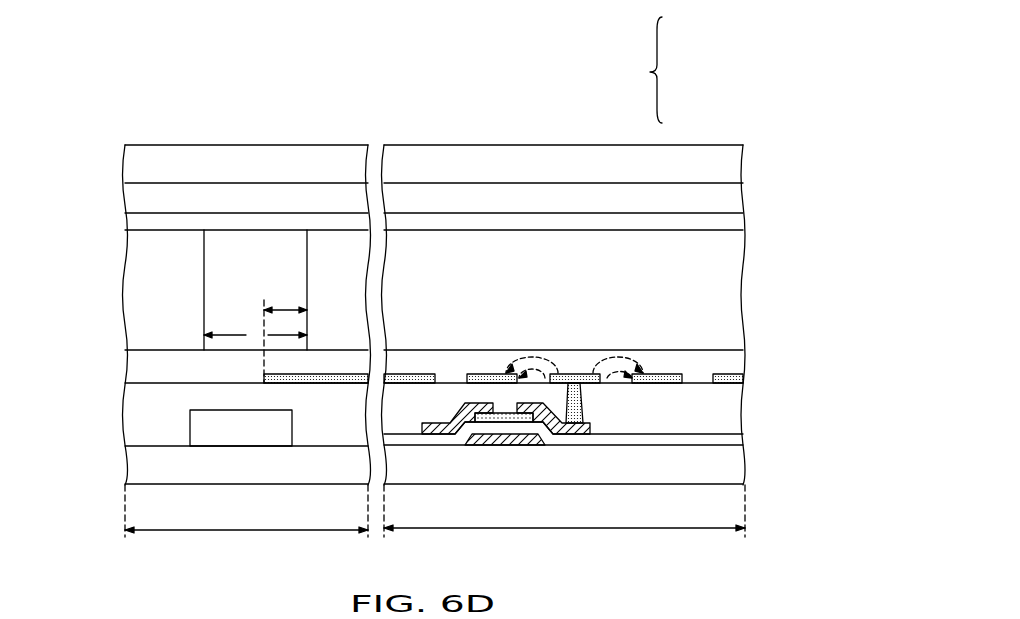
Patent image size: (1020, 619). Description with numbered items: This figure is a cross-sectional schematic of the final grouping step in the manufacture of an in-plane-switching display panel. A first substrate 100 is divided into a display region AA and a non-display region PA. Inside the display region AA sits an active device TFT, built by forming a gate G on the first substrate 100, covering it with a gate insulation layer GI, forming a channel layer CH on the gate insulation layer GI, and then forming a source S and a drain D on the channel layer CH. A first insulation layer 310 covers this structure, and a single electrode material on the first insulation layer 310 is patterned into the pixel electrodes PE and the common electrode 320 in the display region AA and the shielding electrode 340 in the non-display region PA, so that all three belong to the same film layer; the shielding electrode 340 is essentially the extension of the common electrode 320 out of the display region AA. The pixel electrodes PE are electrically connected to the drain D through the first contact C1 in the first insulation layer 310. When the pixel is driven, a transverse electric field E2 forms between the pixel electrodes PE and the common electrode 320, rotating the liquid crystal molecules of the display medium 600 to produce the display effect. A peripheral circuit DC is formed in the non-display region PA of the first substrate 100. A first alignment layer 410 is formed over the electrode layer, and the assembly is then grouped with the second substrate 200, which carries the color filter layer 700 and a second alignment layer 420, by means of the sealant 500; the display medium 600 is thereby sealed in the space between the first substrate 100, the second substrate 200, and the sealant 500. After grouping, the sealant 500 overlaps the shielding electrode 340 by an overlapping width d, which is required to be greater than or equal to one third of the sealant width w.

The second substrate 200 is at (130, 165).
The color filter layer 700 is at (143, 200).
The second alignment layer 420 is at (137, 223).
The sealant 500 is at (217, 277).
The shielding electrode 340 is at (255, 380).
The peripheral circuit DC is at (203, 427).
The overlapping width d is at (285, 334).
The width of the sealant w is at (255, 332).
The display medium 600 is at (725, 263).
The first contact C1 is at (572, 380).
The transverse electric field E2 is at (628, 375).
The common electrode 320 is at (680, 375).
The first alignment layer 410 is at (735, 360).
The pixel electrode PE is at (743, 380).
The first insulation layer 310 is at (735, 415).
The gate insulation layer GI is at (735, 438).
The first substrate 100 is at (735, 470).
The source S is at (441, 434).
The gate G is at (492, 445).
The channel layer CH is at (520, 422).
The drain D is at (573, 434).
The non-display region PA is at (246, 522).
The display region AA is at (564, 521).
The active device TFT is at (653, 72).